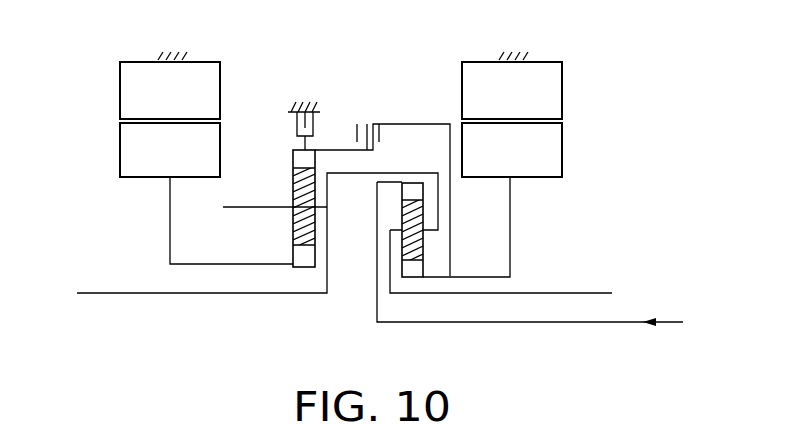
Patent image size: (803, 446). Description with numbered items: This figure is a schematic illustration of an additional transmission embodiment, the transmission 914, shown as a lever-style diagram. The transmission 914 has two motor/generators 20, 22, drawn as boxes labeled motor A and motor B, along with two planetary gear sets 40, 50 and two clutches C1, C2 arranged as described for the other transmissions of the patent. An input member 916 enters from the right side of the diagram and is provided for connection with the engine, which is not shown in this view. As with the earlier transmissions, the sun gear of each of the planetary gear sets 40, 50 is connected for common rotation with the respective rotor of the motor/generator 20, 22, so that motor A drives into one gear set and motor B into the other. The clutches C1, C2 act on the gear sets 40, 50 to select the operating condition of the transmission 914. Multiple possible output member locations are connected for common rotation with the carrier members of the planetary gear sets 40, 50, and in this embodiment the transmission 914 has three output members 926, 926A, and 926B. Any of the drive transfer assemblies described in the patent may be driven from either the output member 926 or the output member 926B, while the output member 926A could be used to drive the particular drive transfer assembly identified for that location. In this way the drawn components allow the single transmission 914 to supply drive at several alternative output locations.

The transmission 914 is at (587, 92).
The motor/generator 20 is at (578, 154).
The motor/generator 22 is at (153, 203).
The clutch C1 is at (281, 127).
The clutch C2 is at (349, 132).
The planetary gear set 50 is at (273, 219).
The planetary gear set 40 is at (433, 246).
The output member 926A is at (247, 208).
The output member 926B is at (163, 294).
The output member 926 is at (537, 294).
The input member 916 is at (602, 323).